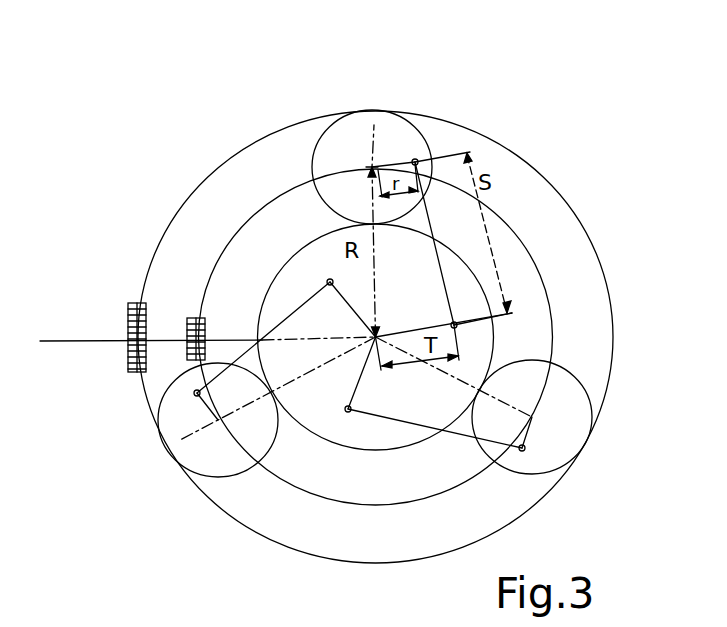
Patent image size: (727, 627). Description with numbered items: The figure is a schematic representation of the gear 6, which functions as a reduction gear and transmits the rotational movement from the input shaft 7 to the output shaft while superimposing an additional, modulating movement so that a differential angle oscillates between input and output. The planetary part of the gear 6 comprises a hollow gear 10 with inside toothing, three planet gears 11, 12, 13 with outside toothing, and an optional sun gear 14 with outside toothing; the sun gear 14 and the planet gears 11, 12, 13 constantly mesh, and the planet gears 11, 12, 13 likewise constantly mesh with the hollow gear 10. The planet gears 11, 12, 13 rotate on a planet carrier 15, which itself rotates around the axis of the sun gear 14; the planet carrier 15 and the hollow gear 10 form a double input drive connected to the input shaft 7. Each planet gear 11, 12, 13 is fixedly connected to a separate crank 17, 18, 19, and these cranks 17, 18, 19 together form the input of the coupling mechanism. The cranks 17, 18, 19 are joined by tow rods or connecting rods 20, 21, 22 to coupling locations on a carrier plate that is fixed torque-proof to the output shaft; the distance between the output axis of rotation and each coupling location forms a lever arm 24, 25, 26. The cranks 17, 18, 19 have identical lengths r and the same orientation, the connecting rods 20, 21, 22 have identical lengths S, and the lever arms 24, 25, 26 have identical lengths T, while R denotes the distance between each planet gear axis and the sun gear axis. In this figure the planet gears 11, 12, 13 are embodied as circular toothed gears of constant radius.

The gear 6 is at (557, 112).
The input shaft 7 is at (46, 340).
The hollow gear 10 is at (585, 227).
The planet gear 11 is at (374, 125).
The planet gear 12 is at (178, 463).
The planet gear 13 is at (568, 450).
The sun gear 14 is at (505, 278).
The planet carrier 15 is at (513, 228).
The crank 17 is at (415, 160).
The crank 18 is at (158, 427).
The crank 19 is at (528, 443).
The connecting rod 20 is at (432, 227).
The connecting rod 21 is at (290, 318).
The connecting rod 22 is at (385, 418).
The lever arm 24 is at (400, 333).
The lever arm 25 is at (345, 312).
The lever arm 26 is at (367, 378).